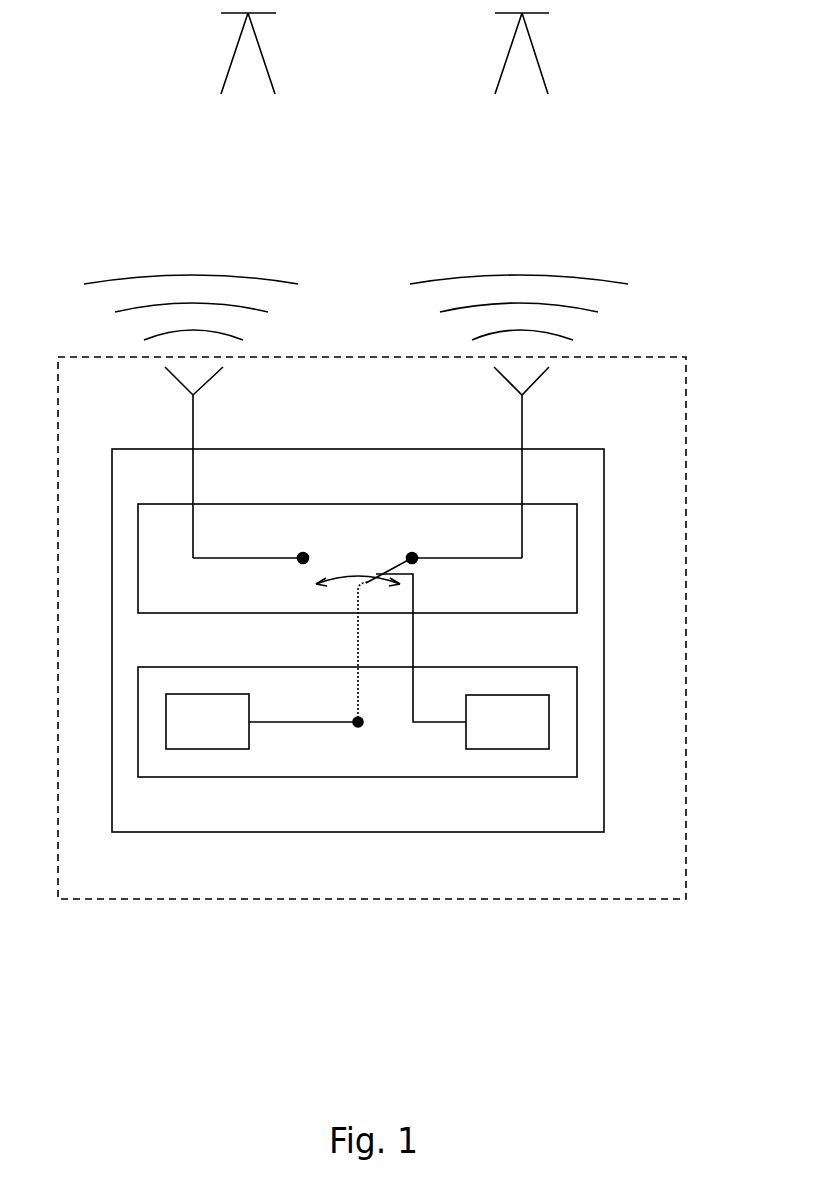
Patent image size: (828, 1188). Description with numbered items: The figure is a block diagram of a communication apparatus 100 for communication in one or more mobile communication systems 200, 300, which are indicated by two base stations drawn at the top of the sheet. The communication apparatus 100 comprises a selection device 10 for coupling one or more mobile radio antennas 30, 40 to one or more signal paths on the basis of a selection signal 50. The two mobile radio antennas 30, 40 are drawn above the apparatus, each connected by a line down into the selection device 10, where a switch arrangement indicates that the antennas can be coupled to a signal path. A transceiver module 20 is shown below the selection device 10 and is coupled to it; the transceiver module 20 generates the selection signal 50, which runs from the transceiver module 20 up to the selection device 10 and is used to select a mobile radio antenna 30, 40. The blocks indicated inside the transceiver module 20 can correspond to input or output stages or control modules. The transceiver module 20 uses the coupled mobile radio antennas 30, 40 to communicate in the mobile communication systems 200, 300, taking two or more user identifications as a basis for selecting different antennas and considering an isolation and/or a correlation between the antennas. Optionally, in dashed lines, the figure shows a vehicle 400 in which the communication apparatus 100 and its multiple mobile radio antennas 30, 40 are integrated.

The selection device 10 is at (472, 616).
The transceiver module 20 is at (472, 778).
The mobile radio antenna 30 is at (200, 397).
The mobile radio antenna 40 is at (527, 397).
The selection signal 50 is at (413, 625).
The communication apparatus 100 is at (610, 835).
The mobile communication system 200 is at (254, 97).
The mobile communication system 300 is at (528, 97).
The vehicle 400 is at (635, 899).